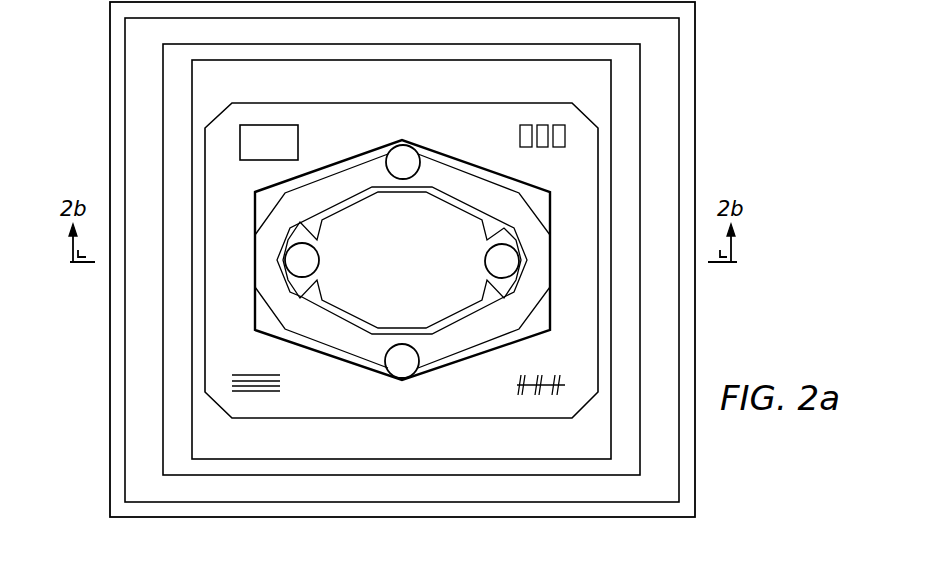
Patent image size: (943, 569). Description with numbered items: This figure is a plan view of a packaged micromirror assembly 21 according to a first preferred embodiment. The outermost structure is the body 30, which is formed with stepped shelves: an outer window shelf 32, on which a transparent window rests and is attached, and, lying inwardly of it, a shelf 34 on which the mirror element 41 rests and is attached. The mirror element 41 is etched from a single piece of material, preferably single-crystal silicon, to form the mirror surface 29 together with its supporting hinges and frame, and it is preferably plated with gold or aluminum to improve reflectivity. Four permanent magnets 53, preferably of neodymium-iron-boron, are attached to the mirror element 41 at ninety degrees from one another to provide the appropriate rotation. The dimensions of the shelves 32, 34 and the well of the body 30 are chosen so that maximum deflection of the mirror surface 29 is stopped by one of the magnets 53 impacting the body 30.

The packaged micromirror assembly 21 is at (90, 95).
The body 30 is at (108, 420).
The window shelf 32 is at (142, 338).
The mirror element 41 is at (478, 99).
The shelf 34 is at (413, 449).
The mirror surface 29 is at (413, 305).
The permanent magnets 53 is at (408, 164).